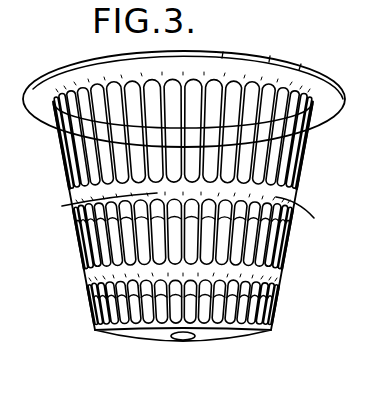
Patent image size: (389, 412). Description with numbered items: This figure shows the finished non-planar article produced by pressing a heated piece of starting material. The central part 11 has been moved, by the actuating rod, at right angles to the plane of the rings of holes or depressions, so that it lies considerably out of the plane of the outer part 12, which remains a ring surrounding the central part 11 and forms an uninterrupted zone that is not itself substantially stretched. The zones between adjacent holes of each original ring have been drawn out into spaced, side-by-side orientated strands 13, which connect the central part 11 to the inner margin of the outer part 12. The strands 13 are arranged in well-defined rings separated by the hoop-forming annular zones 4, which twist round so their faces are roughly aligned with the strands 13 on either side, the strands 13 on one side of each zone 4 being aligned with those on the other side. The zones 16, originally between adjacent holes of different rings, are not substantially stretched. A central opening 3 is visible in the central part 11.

The central opening 3 is at (184, 342).
The annular zone 4 is at (276, 288).
The central part 11 is at (155, 340).
The outer part 12 is at (310, 84).
The strand 13 is at (267, 156).
The zone between adjacent holes of different rings 16 is at (73, 204).